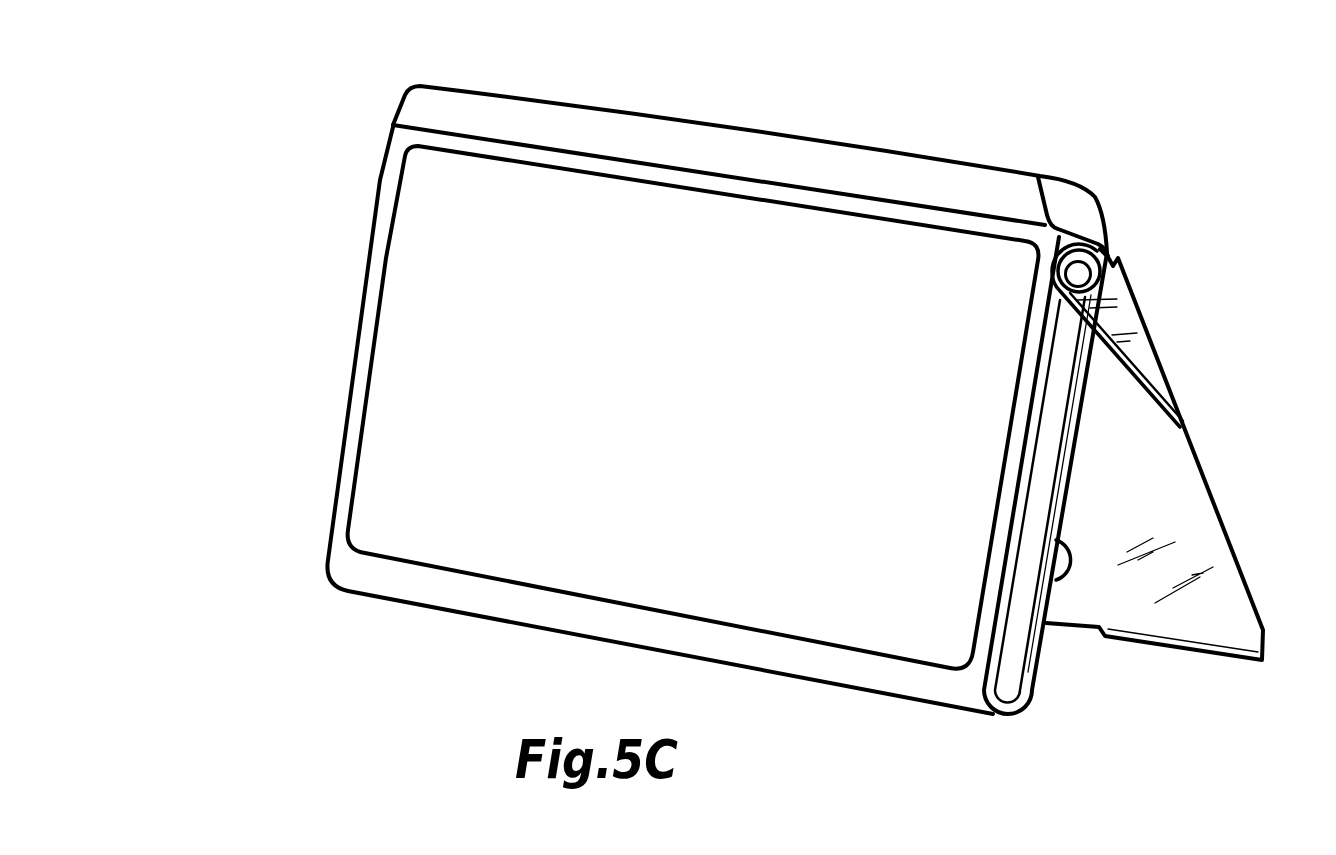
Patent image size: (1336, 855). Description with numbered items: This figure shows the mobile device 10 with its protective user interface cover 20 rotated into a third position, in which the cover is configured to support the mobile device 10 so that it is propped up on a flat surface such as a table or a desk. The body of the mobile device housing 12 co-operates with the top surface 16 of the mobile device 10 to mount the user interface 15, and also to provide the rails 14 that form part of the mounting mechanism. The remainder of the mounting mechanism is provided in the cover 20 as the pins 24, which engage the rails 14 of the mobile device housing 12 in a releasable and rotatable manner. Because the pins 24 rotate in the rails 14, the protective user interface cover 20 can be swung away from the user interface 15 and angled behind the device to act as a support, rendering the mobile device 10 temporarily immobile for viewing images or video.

The mobile device 10 is at (402, 93).
The mobile device housing 12 is at (958, 163).
The rails 14 is at (1005, 650).
The user interface 15 is at (410, 405).
The top surface 16 is at (500, 600).
The protective user interface cover 20 is at (1145, 503).
The pins 24 is at (1084, 273).